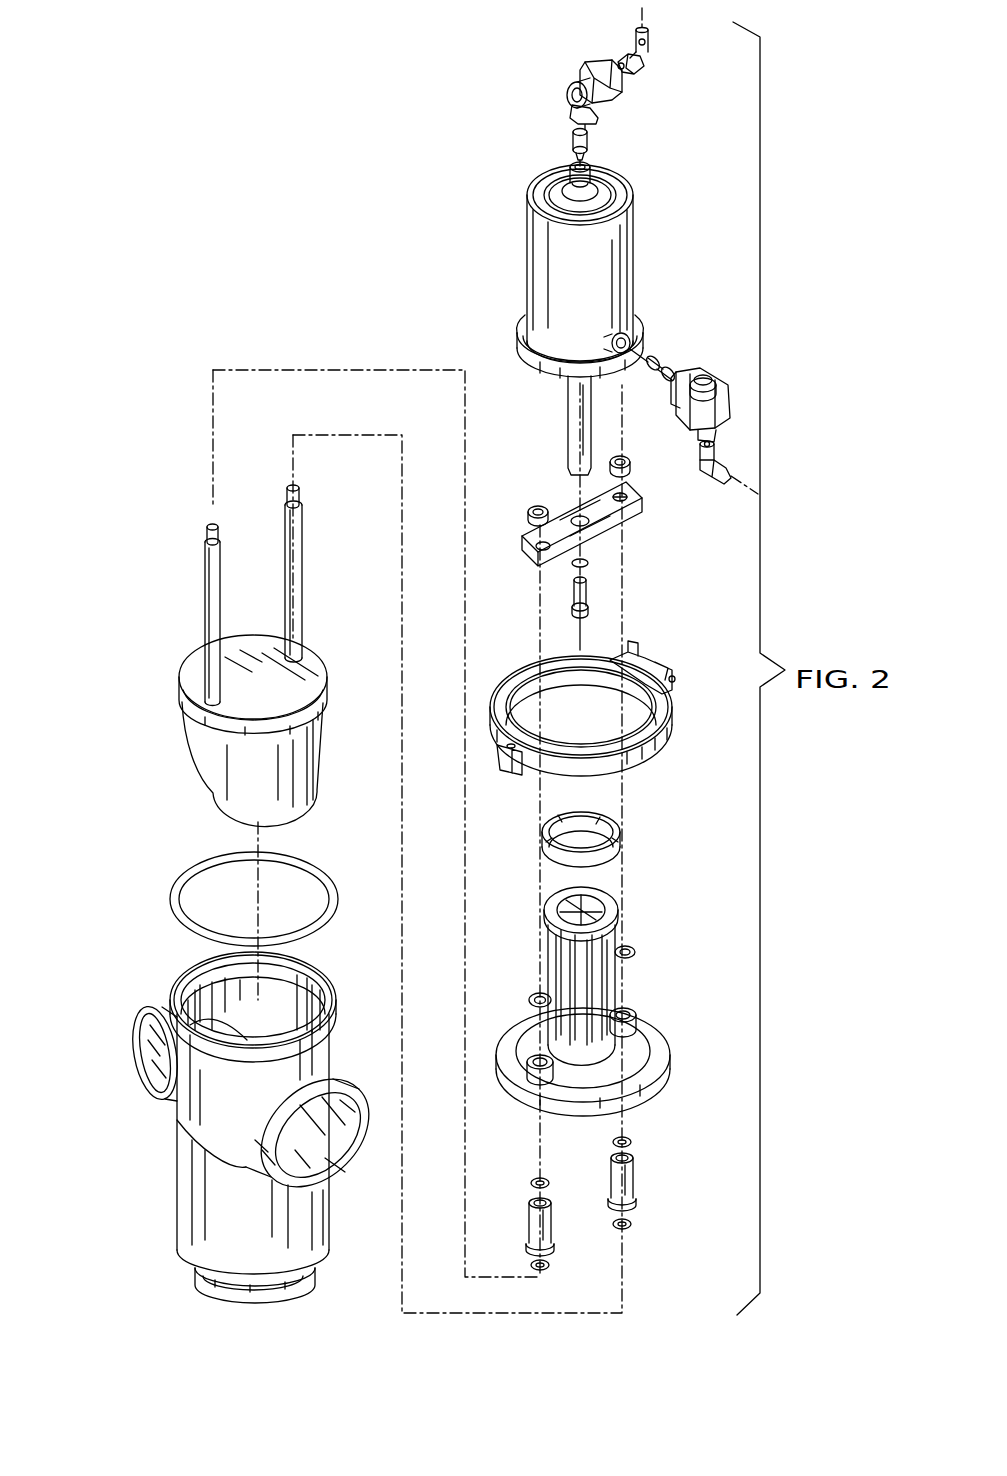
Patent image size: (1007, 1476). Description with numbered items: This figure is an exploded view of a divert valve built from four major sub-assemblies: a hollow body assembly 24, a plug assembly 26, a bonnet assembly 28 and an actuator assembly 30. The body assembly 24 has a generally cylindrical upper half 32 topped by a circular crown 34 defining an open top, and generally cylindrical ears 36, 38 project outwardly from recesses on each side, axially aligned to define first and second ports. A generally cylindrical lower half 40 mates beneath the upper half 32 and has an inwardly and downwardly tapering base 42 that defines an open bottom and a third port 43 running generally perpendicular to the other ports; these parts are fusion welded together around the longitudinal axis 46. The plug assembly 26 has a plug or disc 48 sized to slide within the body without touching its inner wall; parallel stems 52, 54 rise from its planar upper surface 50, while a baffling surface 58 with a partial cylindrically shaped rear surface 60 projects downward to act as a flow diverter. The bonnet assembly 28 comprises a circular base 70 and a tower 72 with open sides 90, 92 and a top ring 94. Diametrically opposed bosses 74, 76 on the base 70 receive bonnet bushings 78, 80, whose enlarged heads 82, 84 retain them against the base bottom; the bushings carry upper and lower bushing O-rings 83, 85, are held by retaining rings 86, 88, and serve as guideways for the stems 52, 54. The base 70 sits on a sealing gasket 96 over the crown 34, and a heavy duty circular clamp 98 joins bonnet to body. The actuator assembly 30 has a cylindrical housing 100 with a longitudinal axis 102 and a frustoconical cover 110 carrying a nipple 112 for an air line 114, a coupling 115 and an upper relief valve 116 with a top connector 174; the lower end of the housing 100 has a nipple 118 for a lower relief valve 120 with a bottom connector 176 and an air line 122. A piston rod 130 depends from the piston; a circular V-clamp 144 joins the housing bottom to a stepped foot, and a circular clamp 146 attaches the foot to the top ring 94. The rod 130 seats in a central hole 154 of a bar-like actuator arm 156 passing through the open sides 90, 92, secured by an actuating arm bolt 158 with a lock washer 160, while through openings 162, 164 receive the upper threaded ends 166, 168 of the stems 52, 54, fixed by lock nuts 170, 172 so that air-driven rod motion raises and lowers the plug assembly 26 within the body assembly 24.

The hollow body assembly 24 is at (121, 1022).
The plug assembly 26 is at (172, 684).
The bonnet assembly 28 is at (640, 985).
The actuator assembly 30 is at (665, 325).
The upper half 32 is at (200, 1118).
The circular crown 34 is at (293, 974).
The ear 36 is at (140, 1085).
The ear 38 is at (327, 1076).
The lower half 40 is at (225, 1226).
The base 42 is at (230, 1284).
The third port 43 is at (262, 1295).
The longitudinal axis 46 is at (258, 897).
The plug or disc 48 is at (322, 704).
The planar upper surface 50 is at (262, 705).
The stem 52 is at (208, 636).
The stem 54 is at (300, 560).
The baffling surface 58 is at (201, 792).
The rear surface 60 is at (265, 797).
The circular base 70 is at (648, 1072).
The tower 72 is at (603, 985).
The boss 74 is at (536, 1070).
The boss 76 is at (634, 1022).
The bonnet bushing 78 is at (536, 1232).
The bonnet bushing 80 is at (624, 1176).
The enlarged head 82 is at (550, 1249).
The upper bushing O-ring 83 is at (632, 1142).
The enlarged head 84 is at (625, 1201).
The lower bushing O-ring 85 is at (628, 1225).
The retaining ring 86 is at (536, 1000).
The retaining ring 88 is at (634, 950).
The open side 90 is at (562, 978).
The open side 92 is at (566, 906).
The top ring 94 is at (612, 907).
The sealing gasket 96 is at (302, 864).
The circular clamp 98 is at (650, 748).
The cylindrical housing 100 is at (655, 250).
The longitudinal axis 102 is at (580, 636).
The frustoconical cover 110 is at (622, 187).
The nipple 112 is at (568, 170).
The air line 114 is at (652, 20).
The coupling 115 is at (590, 141).
The upper relief valve 116 is at (582, 62).
The nipple 118 is at (630, 341).
The lower relief valve 120 is at (718, 390).
The air line 122 is at (735, 502).
The piston rod 130 is at (570, 408).
The circular V-clamp 144 is at (525, 338).
The circular clamp 146 is at (618, 845).
The central hole 154 is at (575, 512).
The actuator arm 156 is at (625, 536).
The actuating arm bolt 158 is at (586, 595).
The lock washer 160 is at (588, 563).
The through opening 162 is at (518, 547).
The through opening 164 is at (625, 497).
The upper threaded end 166 is at (210, 532).
The upper threaded end 168 is at (300, 492).
The lock nut 170 is at (535, 512).
The lock nut 172 is at (624, 465).
The top connector 174 is at (645, 60).
The bottom connector 176 is at (718, 462).